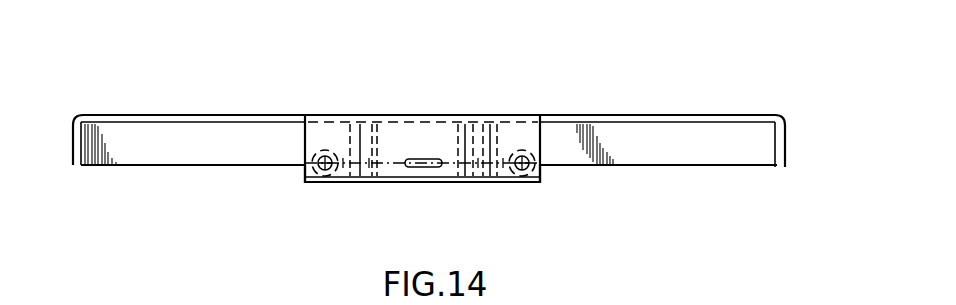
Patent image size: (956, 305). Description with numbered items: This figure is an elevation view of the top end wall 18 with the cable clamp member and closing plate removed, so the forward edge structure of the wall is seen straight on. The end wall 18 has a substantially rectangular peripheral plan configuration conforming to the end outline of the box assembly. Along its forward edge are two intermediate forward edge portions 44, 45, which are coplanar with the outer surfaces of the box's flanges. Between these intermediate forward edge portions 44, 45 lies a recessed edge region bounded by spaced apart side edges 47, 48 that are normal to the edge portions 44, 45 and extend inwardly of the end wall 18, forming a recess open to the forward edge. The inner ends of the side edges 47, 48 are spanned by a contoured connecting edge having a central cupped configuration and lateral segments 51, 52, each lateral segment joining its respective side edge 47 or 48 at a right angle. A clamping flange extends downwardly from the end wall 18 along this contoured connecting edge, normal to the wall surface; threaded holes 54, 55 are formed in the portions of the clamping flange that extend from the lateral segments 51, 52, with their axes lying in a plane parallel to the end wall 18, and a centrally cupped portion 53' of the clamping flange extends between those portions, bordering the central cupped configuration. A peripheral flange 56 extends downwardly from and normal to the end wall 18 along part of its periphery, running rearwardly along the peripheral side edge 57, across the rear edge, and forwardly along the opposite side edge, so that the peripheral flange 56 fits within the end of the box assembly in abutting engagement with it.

The end wall 18 is at (659, 115).
The intermediate forward edge portion 44 is at (193, 150).
The intermediate forward edge portion 45 is at (705, 153).
The side edge 47 is at (303, 142).
The side edge 48 is at (541, 133).
The lateral segment 51 is at (303, 173).
The lateral segment 52 is at (542, 173).
The centrally cupped portion 53' is at (443, 204).
The threaded hole 54 is at (326, 170).
The threaded hole 55 is at (523, 170).
The peripheral flange 56 is at (92, 147).
The peripheral side edge 57 is at (787, 144).